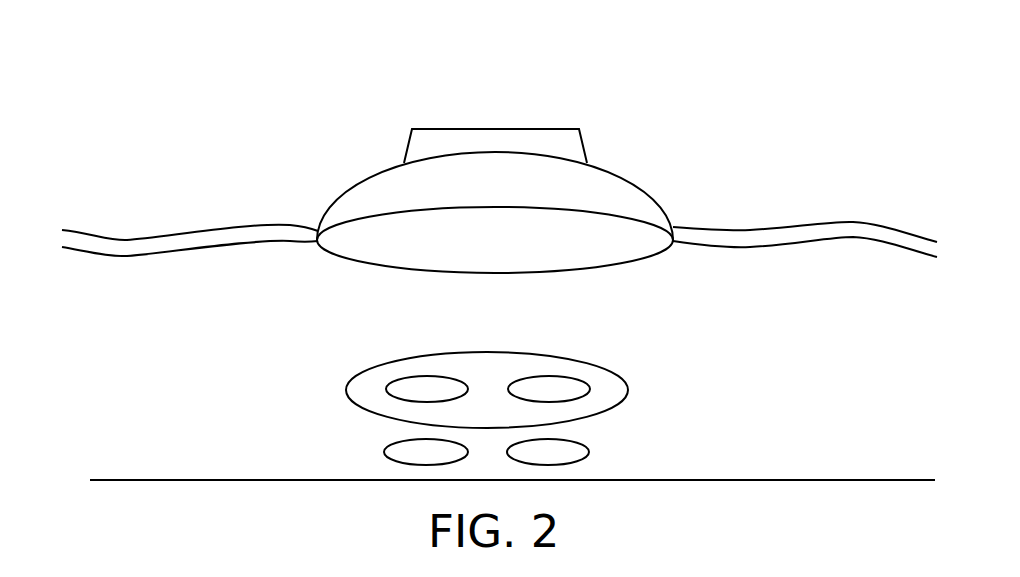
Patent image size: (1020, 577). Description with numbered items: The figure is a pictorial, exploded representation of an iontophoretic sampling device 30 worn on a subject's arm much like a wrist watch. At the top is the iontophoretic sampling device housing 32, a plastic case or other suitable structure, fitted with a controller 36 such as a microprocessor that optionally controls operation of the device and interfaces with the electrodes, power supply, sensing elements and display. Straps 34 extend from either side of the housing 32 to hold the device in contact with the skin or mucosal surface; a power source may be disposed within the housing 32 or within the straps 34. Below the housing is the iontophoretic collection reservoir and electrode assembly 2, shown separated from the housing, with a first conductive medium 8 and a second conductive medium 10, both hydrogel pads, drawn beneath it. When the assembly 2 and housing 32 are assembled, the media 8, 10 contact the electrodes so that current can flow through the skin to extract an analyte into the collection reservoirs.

The iontophoretic sampling device 30 is at (294, 122).
The iontophoretic sampling device housing 32 is at (582, 182).
The straps 34 is at (139, 242).
The controller 36 is at (436, 130).
The iontophoretic collection reservoir and electrode assembly 2 is at (306, 398).
The first conductive medium 8 is at (398, 451).
The second conductive medium 10 is at (577, 448).